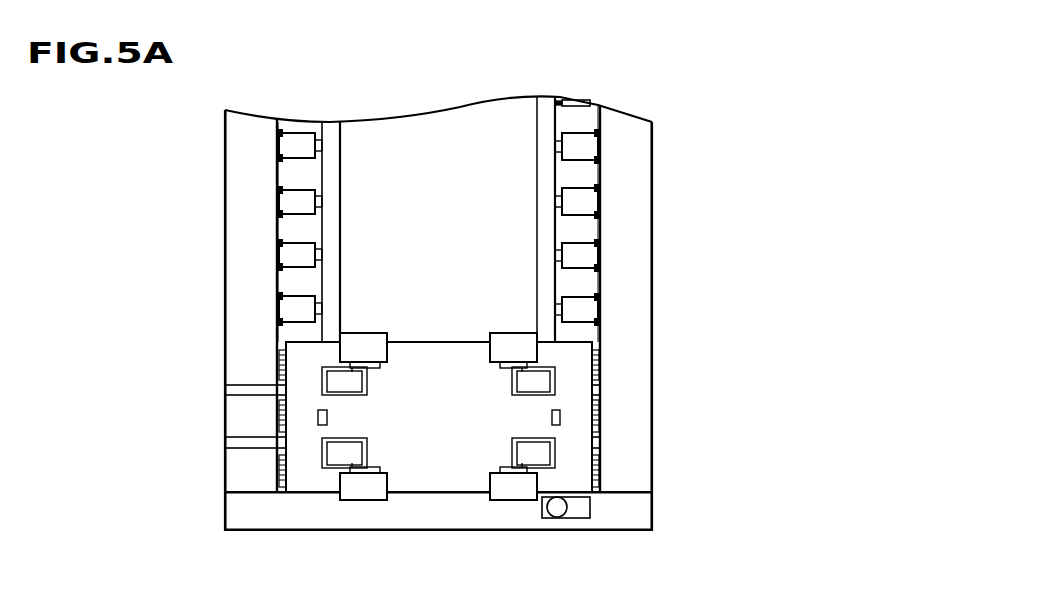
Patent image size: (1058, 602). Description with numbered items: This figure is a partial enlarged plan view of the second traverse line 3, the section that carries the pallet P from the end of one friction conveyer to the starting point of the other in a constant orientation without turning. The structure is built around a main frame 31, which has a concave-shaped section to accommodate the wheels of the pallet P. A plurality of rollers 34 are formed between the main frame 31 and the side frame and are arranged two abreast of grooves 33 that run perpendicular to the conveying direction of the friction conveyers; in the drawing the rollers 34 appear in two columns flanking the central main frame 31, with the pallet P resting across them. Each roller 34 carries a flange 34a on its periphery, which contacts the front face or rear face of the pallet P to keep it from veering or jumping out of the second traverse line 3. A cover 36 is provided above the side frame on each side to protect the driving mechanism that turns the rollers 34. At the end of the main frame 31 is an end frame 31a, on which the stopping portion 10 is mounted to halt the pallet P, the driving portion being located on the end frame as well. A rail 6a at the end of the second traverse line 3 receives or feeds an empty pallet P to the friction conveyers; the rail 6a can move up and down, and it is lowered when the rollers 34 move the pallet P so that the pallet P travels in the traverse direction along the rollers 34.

The second traverse line 3 is at (649, 96).
The rail 6a is at (238, 390).
The stopping portion 10 is at (575, 510).
The main frame 31 is at (460, 128).
The end frame 31a is at (362, 523).
The grooves 33 is at (302, 125).
The rollers 34 is at (295, 203).
The flange 34a is at (595, 233).
The cover 36 is at (253, 148).
The pallet P is at (438, 477).